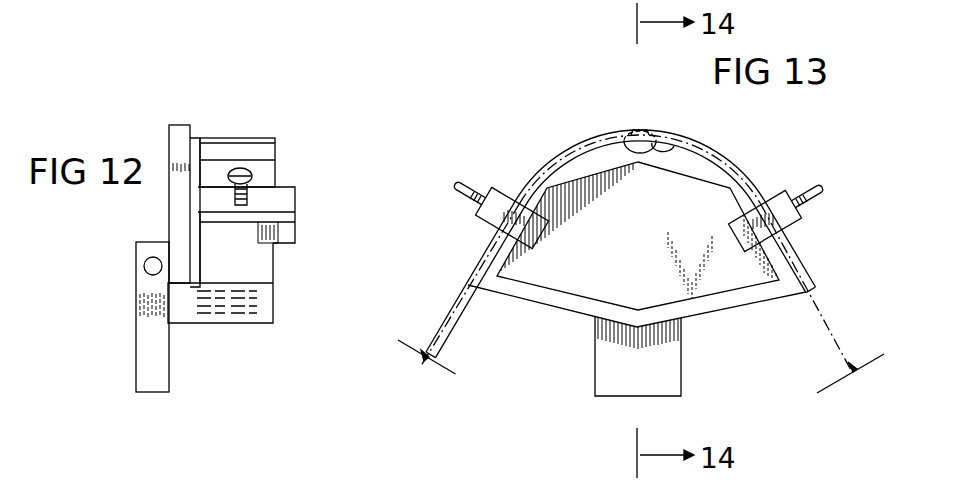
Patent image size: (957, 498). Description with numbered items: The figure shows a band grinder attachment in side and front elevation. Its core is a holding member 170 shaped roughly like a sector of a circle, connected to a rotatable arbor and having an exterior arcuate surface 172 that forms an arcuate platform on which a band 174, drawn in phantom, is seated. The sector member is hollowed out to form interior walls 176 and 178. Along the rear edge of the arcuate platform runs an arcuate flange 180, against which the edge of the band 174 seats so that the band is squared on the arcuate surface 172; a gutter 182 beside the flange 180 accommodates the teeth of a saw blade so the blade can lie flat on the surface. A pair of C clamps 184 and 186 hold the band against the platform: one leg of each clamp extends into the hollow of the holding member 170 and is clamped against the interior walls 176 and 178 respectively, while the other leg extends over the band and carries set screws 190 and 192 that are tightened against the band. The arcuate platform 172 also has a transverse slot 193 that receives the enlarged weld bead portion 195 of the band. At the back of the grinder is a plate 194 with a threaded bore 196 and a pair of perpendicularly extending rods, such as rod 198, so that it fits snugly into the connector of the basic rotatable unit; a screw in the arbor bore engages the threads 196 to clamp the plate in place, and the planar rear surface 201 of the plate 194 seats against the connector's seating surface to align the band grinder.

In FIG. 12, the holding member 170 is at (258, 313).
In FIG. 13, the holding member 170 is at (636, 257).
In FIG. 12, the exterior arcuate surface 172 is at (250, 155).
In FIG. 13, the exterior arcuate surface 172 is at (598, 150).
In FIG. 13, the band 174 is at (853, 320).
In FIG. 13, the interior wall 176 is at (512, 272).
In FIG. 13, the interior wall 178 is at (771, 265).
In FIG. 12, the arcuate flange 180 is at (197, 135).
In FIG. 13, the arcuate flange 180 is at (565, 152).
In FIG. 12, the gutter 182 is at (195, 148).
In FIG. 12, the C clamp 184 is at (288, 230).
In FIG. 13, the C clamp 184 is at (495, 220).
In FIG. 13, the C clamp 186 is at (780, 207).
In FIG. 12, the set screw 190 is at (243, 177).
In FIG. 13, the set screw 190 is at (462, 180).
In FIG. 13, the set screw 192 is at (817, 200).
In FIG. 13, the transverse slot 193 is at (675, 148).
In FIG. 12, the plate 194 is at (153, 378).
In FIG. 13, the plate 194 is at (620, 375).
In FIG. 13, the enlarged weld bead portion 195 is at (640, 130).
In FIG. 12, the threaded bore 196 is at (137, 312).
In FIG. 12, the rod 198 is at (145, 263).
In FIG. 12, the rear surface 201 is at (137, 342).